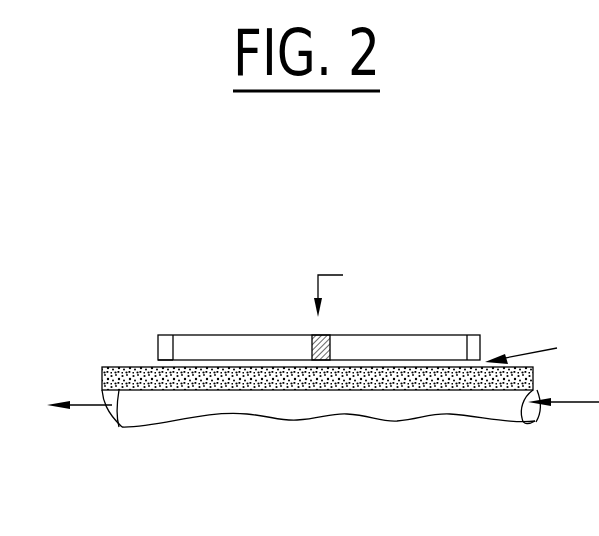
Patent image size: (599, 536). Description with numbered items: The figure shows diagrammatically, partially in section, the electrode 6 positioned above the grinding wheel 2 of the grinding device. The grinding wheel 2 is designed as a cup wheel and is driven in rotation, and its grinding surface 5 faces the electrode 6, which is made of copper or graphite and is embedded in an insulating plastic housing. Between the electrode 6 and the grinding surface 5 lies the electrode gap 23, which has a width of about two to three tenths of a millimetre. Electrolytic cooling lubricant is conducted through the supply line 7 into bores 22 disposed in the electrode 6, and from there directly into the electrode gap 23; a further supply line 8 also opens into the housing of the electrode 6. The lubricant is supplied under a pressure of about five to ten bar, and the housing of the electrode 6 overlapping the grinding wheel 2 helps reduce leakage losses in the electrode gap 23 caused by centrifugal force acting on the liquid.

The grinding wheel 2 is at (184, 408).
The grinding surface 5 is at (388, 392).
The electrode 6 is at (432, 347).
The supply line 7 is at (333, 275).
The supply line 8 is at (529, 352).
The bores 22 is at (285, 300).
The electrode gap 23 is at (158, 365).